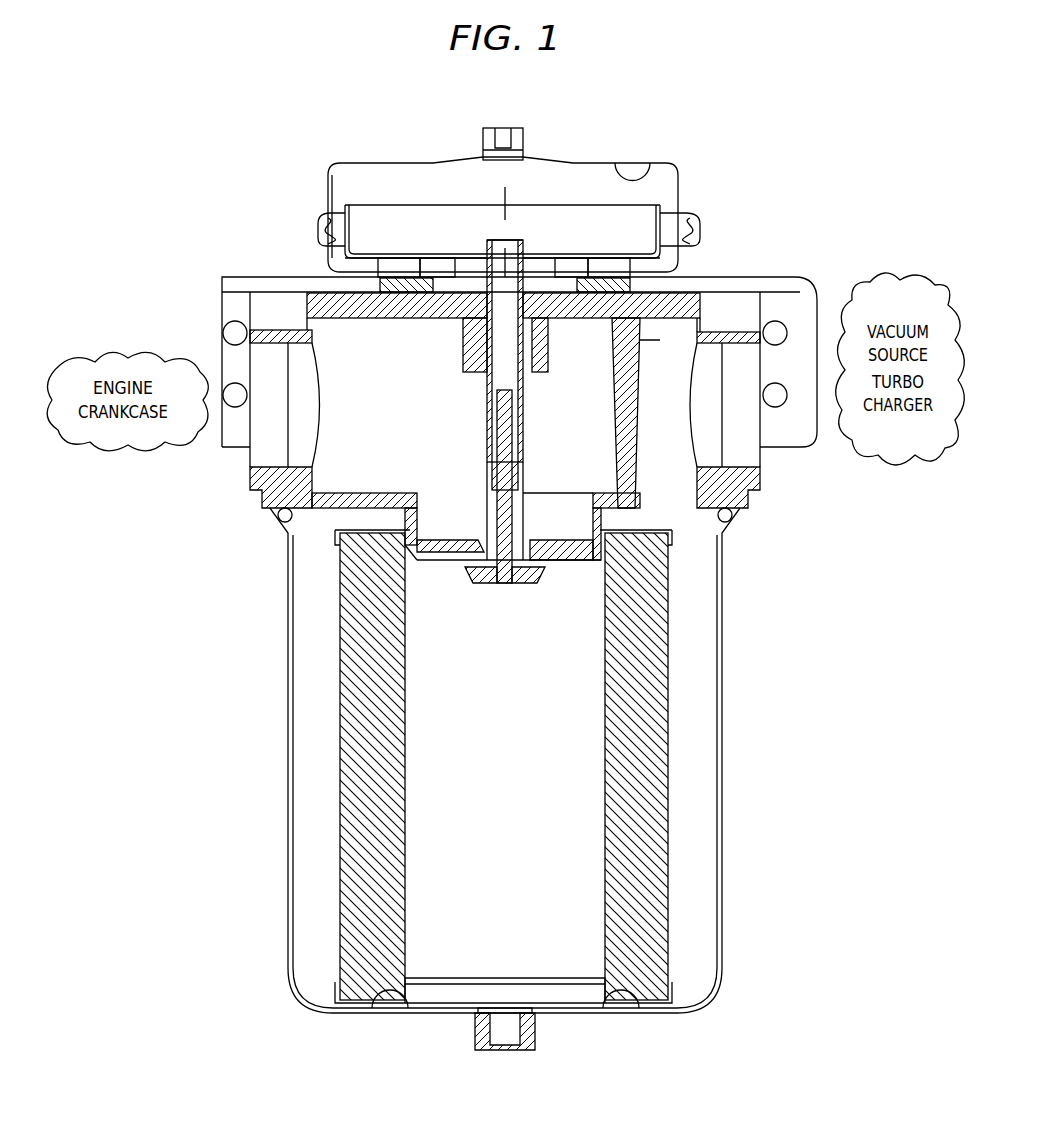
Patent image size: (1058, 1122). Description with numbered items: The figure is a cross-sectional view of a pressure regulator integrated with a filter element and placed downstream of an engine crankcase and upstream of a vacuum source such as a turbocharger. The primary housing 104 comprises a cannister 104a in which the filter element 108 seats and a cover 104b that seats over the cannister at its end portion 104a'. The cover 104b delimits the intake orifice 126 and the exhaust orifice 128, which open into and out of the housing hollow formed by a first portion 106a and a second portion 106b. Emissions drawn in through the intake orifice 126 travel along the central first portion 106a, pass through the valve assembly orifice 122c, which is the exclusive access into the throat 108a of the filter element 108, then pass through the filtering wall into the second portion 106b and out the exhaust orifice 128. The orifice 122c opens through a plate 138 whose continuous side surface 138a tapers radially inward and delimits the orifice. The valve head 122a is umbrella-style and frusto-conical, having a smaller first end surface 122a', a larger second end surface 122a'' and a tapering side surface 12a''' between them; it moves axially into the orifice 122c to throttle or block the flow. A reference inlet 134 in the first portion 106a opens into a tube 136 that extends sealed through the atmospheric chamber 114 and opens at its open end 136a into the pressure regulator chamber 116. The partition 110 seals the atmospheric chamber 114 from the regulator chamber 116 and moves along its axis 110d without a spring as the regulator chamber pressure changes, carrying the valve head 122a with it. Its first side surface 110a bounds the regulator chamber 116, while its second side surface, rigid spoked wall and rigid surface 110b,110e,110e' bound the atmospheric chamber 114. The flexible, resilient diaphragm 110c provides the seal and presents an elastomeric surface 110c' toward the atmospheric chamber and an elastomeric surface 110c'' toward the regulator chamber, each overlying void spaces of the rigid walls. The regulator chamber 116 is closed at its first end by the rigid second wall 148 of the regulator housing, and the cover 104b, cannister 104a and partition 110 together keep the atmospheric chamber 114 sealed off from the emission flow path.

The primary housing 104 is at (811, 560).
The cannister 104a is at (536, 758).
The end portion of the cannister 104a' is at (749, 547).
The cover 104b is at (268, 508).
The first portion of the hollow 106a is at (340, 338).
The second portion of the hollow 106b is at (709, 878).
The filter element 108 is at (348, 770).
The throat of the filter element 108a is at (477, 825).
The partition 110 is at (582, 242).
The first side surface of the partition 110a is at (392, 212).
The second side surface, rigid wall and rigid surface 110b,110e,110e' is at (721, 236).
The diaphragm 110c is at (690, 186).
The elastomeric surface 110c' is at (292, 212).
The elastomeric surface 110c'' is at (302, 197).
The axis of the partition 110d is at (496, 198).
The atmospheric chamber 114 is at (372, 268).
The pressure regulator chamber 116 is at (538, 195).
The valve head 122a is at (453, 607).
The first end surface of the valve head 122a' is at (321, 584).
The second end surface of the valve head 122a'' is at (528, 632).
The side surface of the valve head 12a''' is at (555, 606).
The valve assembly orifice 122c is at (481, 518).
The intake orifice 126 is at (257, 420).
The exhaust orifice 128 is at (736, 428).
The reference inlet 134 is at (487, 413).
The tube 136 is at (528, 378).
The open end of the tube 136a is at (486, 230).
The plate 138 is at (570, 555).
The side surface of the plate 138a is at (550, 552).
The second wall 148 is at (651, 170).